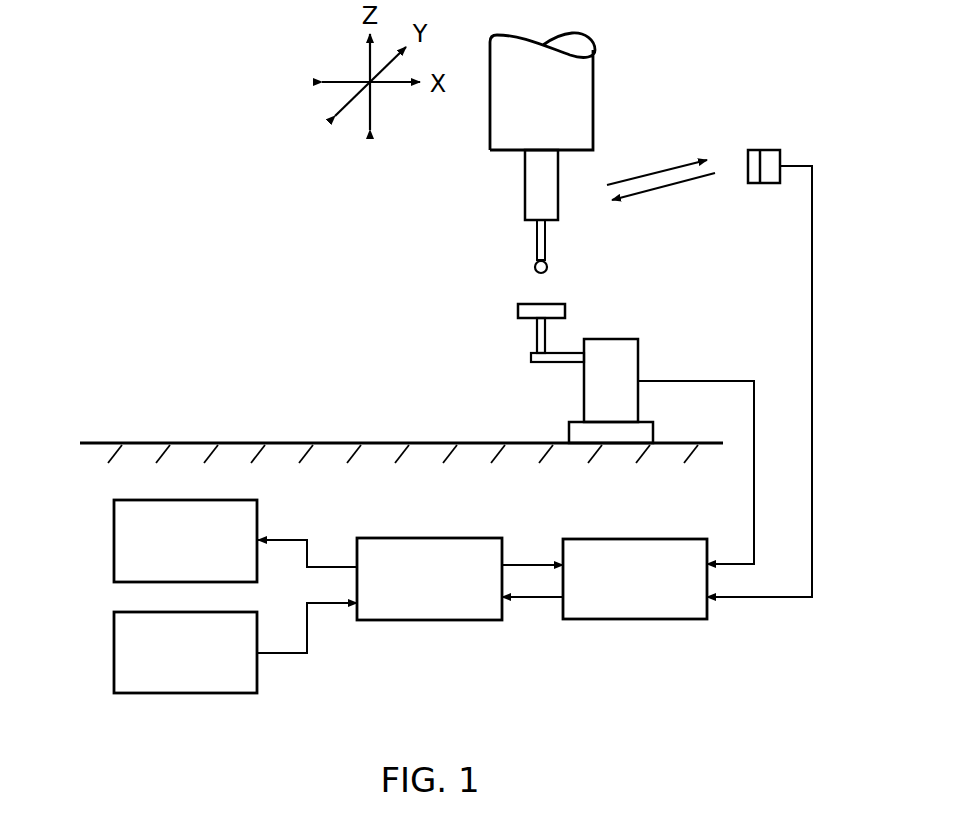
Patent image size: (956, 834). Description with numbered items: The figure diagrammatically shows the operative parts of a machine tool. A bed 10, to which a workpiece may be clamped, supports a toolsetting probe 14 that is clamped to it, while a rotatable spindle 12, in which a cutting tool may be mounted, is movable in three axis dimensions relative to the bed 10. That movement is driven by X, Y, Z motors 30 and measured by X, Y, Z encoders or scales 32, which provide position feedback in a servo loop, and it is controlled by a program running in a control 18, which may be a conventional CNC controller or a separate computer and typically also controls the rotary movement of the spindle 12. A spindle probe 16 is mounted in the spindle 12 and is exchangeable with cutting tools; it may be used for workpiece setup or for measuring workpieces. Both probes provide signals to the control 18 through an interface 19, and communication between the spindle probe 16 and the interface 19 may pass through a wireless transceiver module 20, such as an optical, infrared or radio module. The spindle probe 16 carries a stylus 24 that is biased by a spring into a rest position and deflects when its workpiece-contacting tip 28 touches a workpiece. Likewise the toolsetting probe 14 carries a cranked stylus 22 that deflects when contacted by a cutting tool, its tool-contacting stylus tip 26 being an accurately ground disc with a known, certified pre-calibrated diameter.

The bed 10 is at (148, 443).
The rotatable spindle 12 is at (596, 94).
The toolsetting probe 14 is at (640, 360).
The spindle probe 16 is at (523, 182).
The control 18 is at (430, 622).
The interface 19 is at (630, 622).
The wireless transceiver module 20 is at (768, 148).
The stylus 22 is at (553, 363).
The stylus 24 is at (534, 238).
The tool-contacting stylus tip 26 is at (518, 312).
The workpiece-contacting tip 28 is at (552, 267).
The X, Y, Z motors 30 is at (113, 540).
The X, Y, Z encoders or scales 32 is at (113, 658).